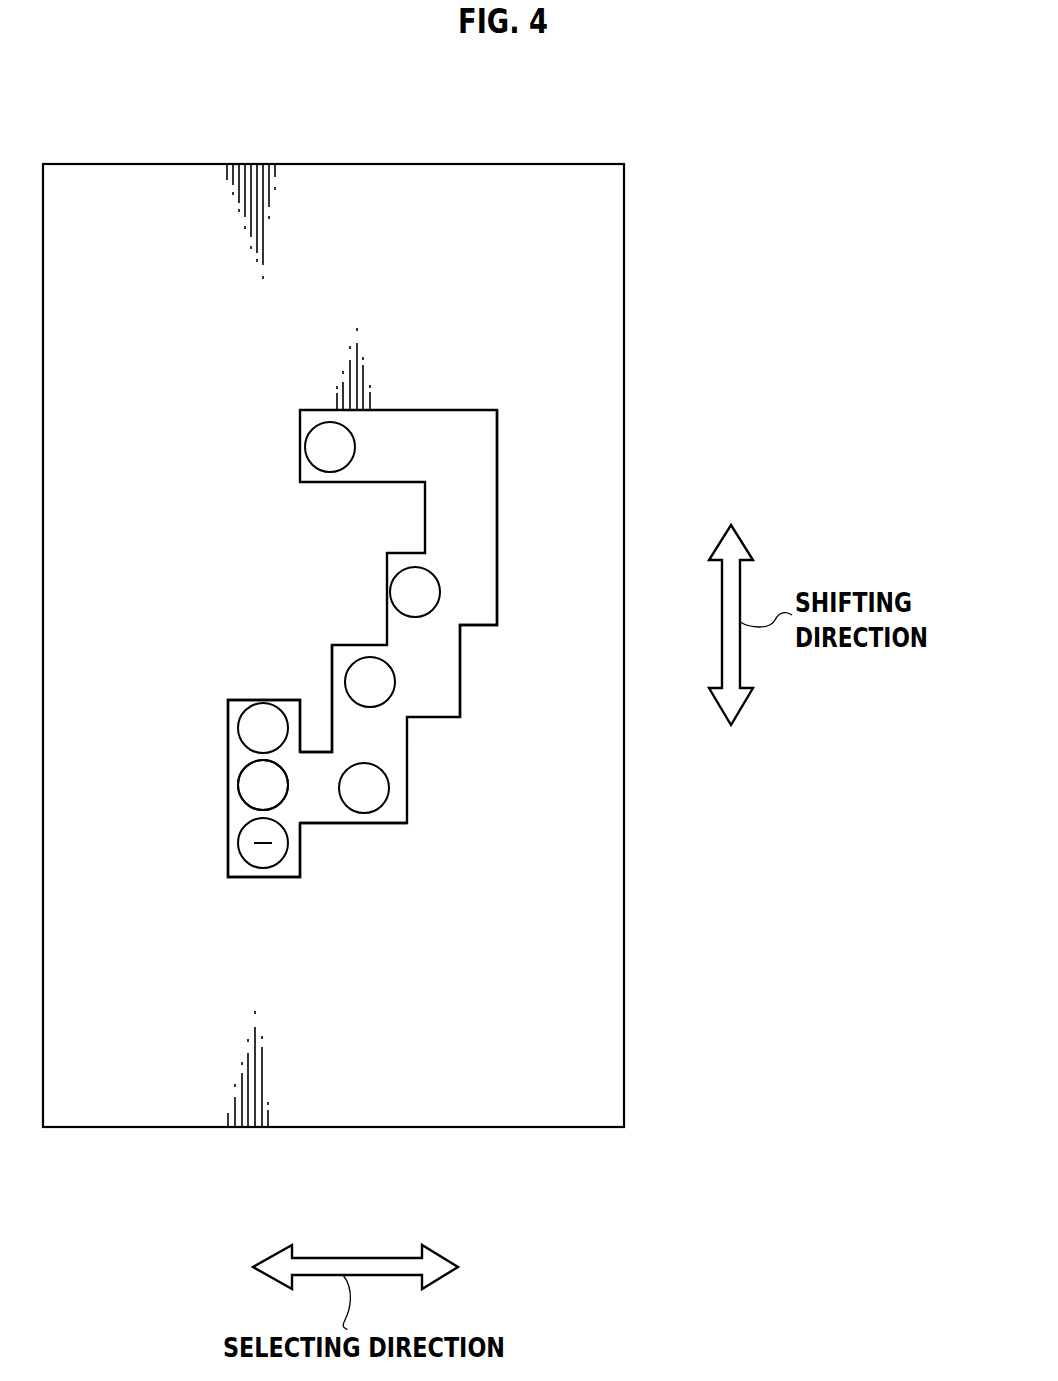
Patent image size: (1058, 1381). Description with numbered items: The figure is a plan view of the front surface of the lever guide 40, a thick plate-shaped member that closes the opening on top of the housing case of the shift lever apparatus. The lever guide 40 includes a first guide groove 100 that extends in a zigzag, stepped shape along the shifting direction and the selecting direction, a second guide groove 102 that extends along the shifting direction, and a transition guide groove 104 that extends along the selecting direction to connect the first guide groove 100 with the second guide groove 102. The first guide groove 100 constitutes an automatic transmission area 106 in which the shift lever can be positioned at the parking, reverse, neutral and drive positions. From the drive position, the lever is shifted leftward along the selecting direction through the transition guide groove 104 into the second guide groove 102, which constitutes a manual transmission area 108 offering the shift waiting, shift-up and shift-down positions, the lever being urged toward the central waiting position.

The lever guide 40 is at (490, 183).
The first guide groove 100 is at (398, 422).
The second guide groove 102 is at (230, 757).
The transition guide groove 104 is at (317, 752).
The automatic transmission area 106 is at (475, 520).
The manual transmission area 108 is at (230, 812).